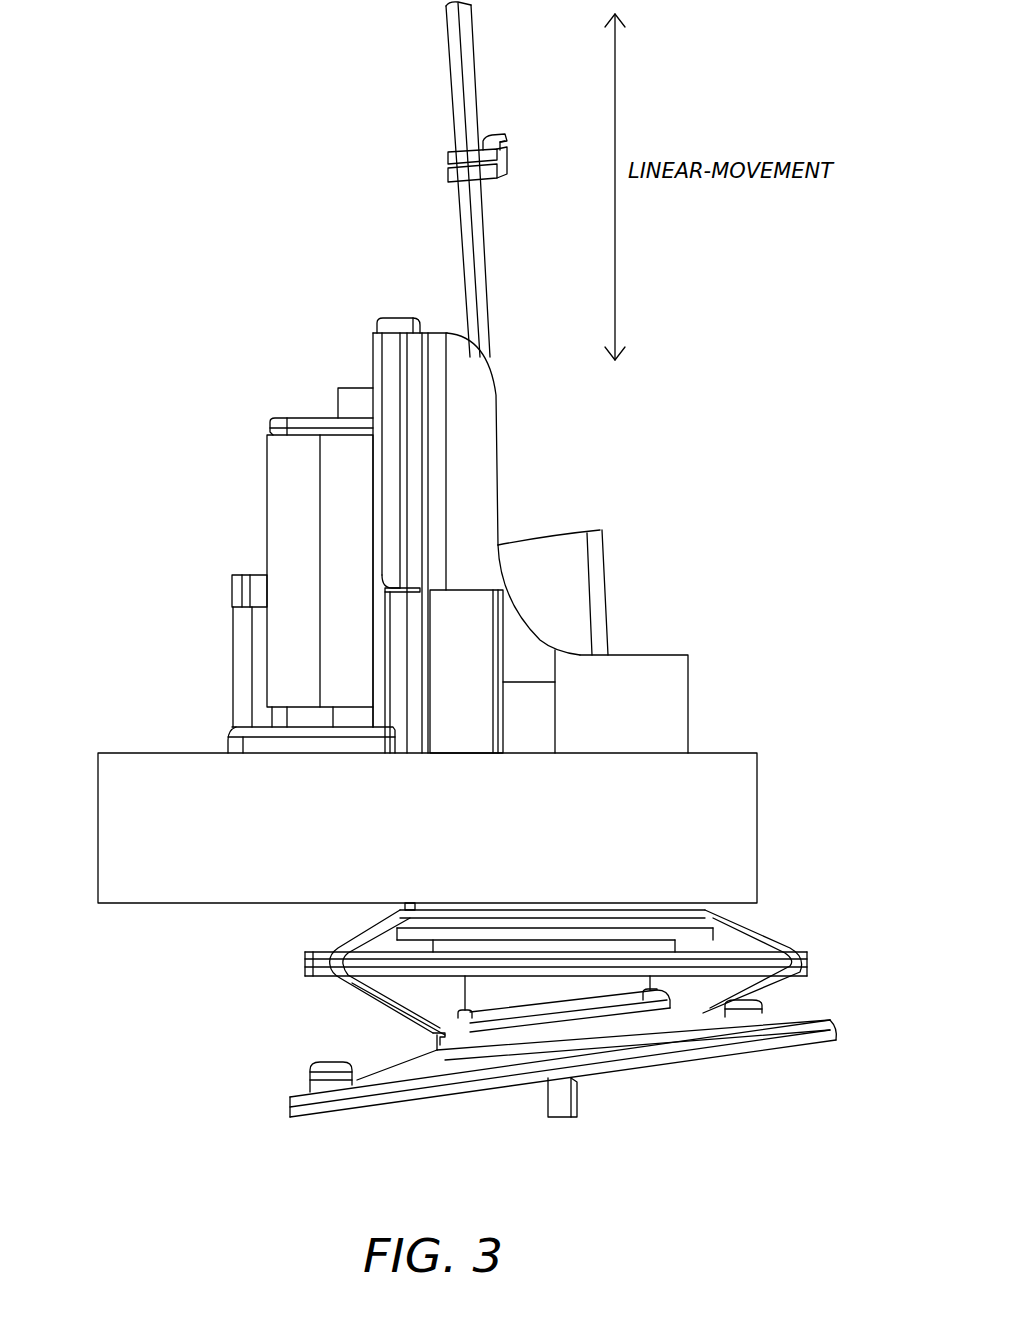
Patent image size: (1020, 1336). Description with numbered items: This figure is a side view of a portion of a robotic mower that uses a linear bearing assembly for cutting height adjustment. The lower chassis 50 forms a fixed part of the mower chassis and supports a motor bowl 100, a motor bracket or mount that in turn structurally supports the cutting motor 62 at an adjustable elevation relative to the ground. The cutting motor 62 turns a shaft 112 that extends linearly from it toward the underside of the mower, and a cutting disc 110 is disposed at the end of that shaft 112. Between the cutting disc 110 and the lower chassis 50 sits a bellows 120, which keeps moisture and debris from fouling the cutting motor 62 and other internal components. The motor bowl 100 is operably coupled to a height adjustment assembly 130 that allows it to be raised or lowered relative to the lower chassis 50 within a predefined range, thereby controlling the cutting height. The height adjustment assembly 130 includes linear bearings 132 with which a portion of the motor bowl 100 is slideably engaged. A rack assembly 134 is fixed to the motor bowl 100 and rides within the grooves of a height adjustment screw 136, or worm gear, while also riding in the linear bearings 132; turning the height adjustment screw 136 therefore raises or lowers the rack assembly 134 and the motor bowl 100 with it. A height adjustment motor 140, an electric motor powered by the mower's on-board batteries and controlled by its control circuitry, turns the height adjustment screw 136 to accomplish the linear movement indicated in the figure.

The height adjustment assembly 130 is at (375, 179).
The linear bearings 132 is at (414, 516).
The height adjustment screw 136 is at (313, 382).
The height adjustment motor 140 is at (255, 585).
The rack assembly 134 is at (251, 651).
The cutting motor 62 is at (564, 494).
The motor bowl 100 is at (673, 699).
The lower chassis 50 is at (401, 855).
The bellows 120 is at (485, 977).
The cutting disc 110 is at (532, 1083).
The shaft 112 is at (511, 1126).